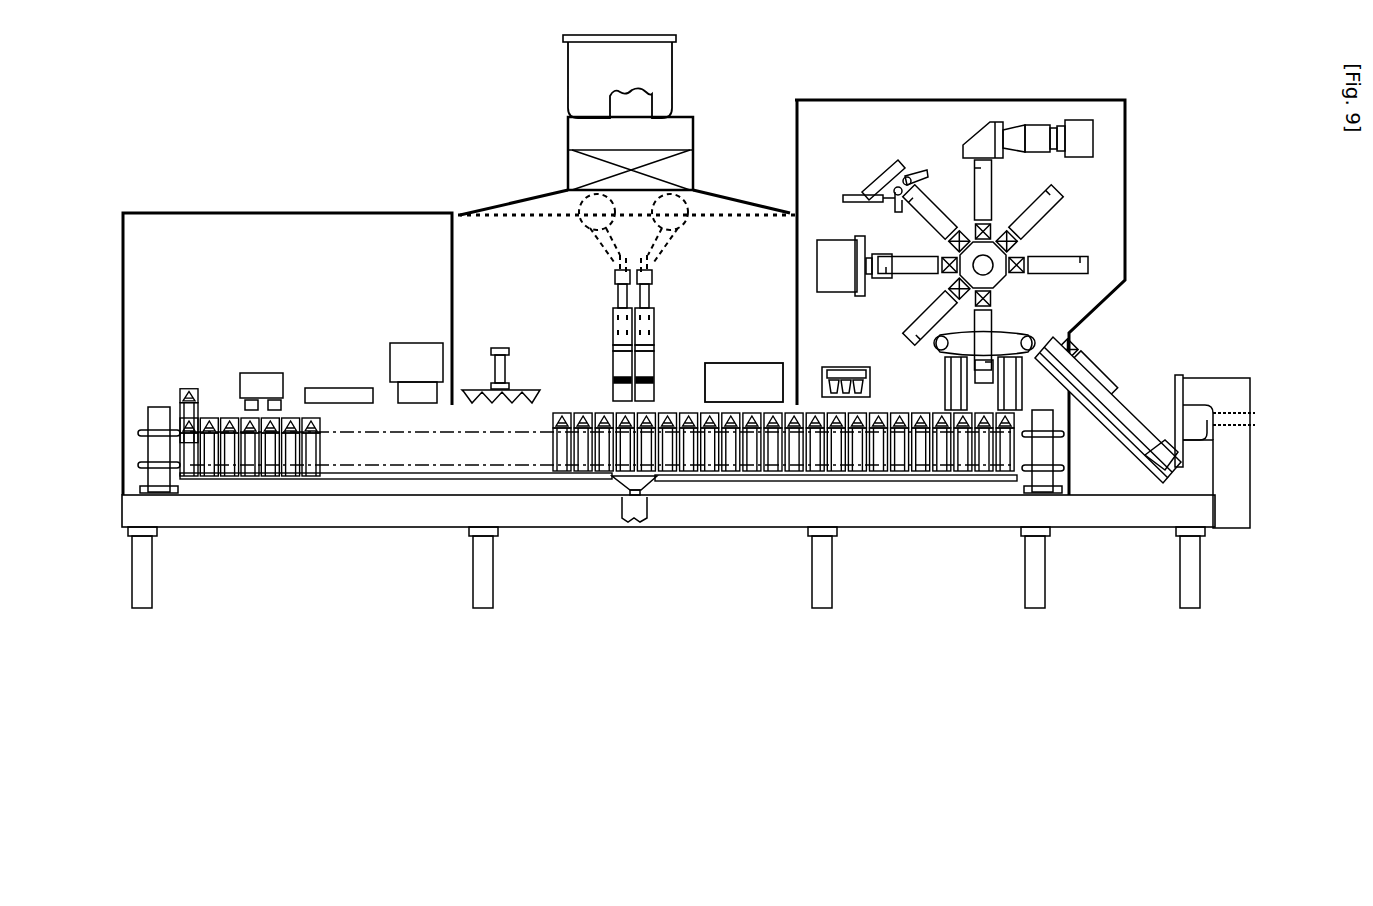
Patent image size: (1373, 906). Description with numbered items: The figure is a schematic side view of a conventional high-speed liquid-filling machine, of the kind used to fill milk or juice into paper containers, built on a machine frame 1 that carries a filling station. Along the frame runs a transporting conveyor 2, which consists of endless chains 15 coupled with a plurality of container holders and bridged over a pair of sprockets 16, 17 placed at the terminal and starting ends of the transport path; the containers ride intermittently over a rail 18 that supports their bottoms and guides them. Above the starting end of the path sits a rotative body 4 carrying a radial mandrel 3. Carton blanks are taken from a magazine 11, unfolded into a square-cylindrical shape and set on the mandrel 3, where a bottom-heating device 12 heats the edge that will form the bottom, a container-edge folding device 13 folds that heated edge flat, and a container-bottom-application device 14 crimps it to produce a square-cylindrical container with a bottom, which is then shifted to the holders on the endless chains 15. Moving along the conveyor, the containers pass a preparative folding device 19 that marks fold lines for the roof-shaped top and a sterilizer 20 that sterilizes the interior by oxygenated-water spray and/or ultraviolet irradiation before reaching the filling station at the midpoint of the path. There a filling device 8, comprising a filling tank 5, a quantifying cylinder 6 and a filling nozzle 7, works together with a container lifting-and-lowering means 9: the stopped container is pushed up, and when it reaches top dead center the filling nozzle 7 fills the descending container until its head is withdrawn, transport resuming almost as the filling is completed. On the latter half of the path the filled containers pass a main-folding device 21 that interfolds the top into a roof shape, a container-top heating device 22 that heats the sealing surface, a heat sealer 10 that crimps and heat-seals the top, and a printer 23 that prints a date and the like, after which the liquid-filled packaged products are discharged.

The machine frame 1 is at (920, 523).
The transporting conveyor 2 is at (598, 487).
The radial mandrel 3 is at (1090, 264).
The rotative body 4 is at (1086, 209).
The filling tank 5 is at (568, 72).
The quantifying cylinder 6 is at (582, 228).
The filling nozzle 7 is at (655, 365).
The filling device 8 is at (540, 150).
The container lifting-and-lowering means 9 is at (657, 501).
The heat sealer 10 is at (334, 388).
The magazine 11 is at (1166, 360).
The bottom-heating device 12 is at (978, 122).
The container-edge folding device 13 is at (890, 185).
The container-bottom-application device 14 is at (827, 274).
The endless chains 15 is at (374, 470).
The sprocket 16 is at (1064, 437).
The sprocket 17 is at (140, 433).
The rail 18 is at (460, 480).
The preparative folding device 19 is at (846, 366).
The sterilizer 20 is at (756, 393).
The main-folding device 21 is at (505, 350).
The container-top heating device 22 is at (406, 369).
The printer 23 is at (260, 373).